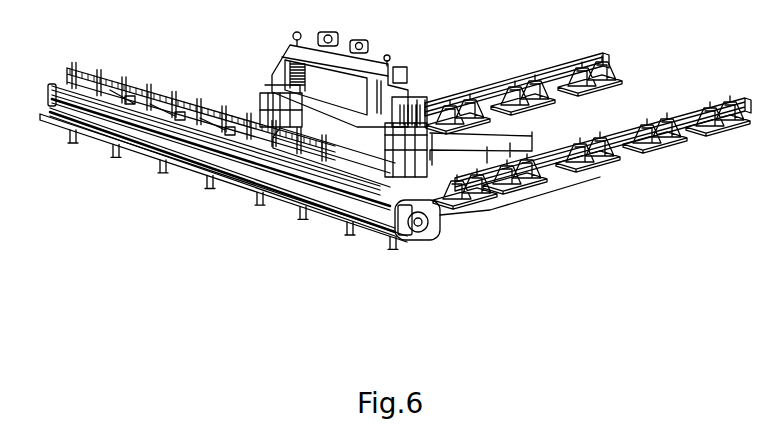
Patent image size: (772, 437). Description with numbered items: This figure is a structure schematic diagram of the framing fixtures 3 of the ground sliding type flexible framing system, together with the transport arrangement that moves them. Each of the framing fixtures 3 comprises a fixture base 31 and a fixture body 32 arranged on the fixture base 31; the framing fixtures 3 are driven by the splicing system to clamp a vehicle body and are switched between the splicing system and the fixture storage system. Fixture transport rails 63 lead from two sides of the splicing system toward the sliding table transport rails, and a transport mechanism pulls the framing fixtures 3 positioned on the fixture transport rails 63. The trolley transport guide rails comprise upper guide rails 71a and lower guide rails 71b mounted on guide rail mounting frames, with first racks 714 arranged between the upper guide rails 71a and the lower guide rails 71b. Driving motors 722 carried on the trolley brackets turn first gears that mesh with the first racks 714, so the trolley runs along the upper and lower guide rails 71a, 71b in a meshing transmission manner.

The framing fixtures 3 is at (244, 30).
The fixture bases 31 is at (268, 118).
The fixture bodies 32 is at (287, 55).
The fixture transport rails 63 is at (540, 82).
The upper guide rails 71a is at (54, 88).
The lower guide rails 71b is at (52, 103).
The first racks 714 is at (201, 106).
The driving motors 722 is at (384, 229).